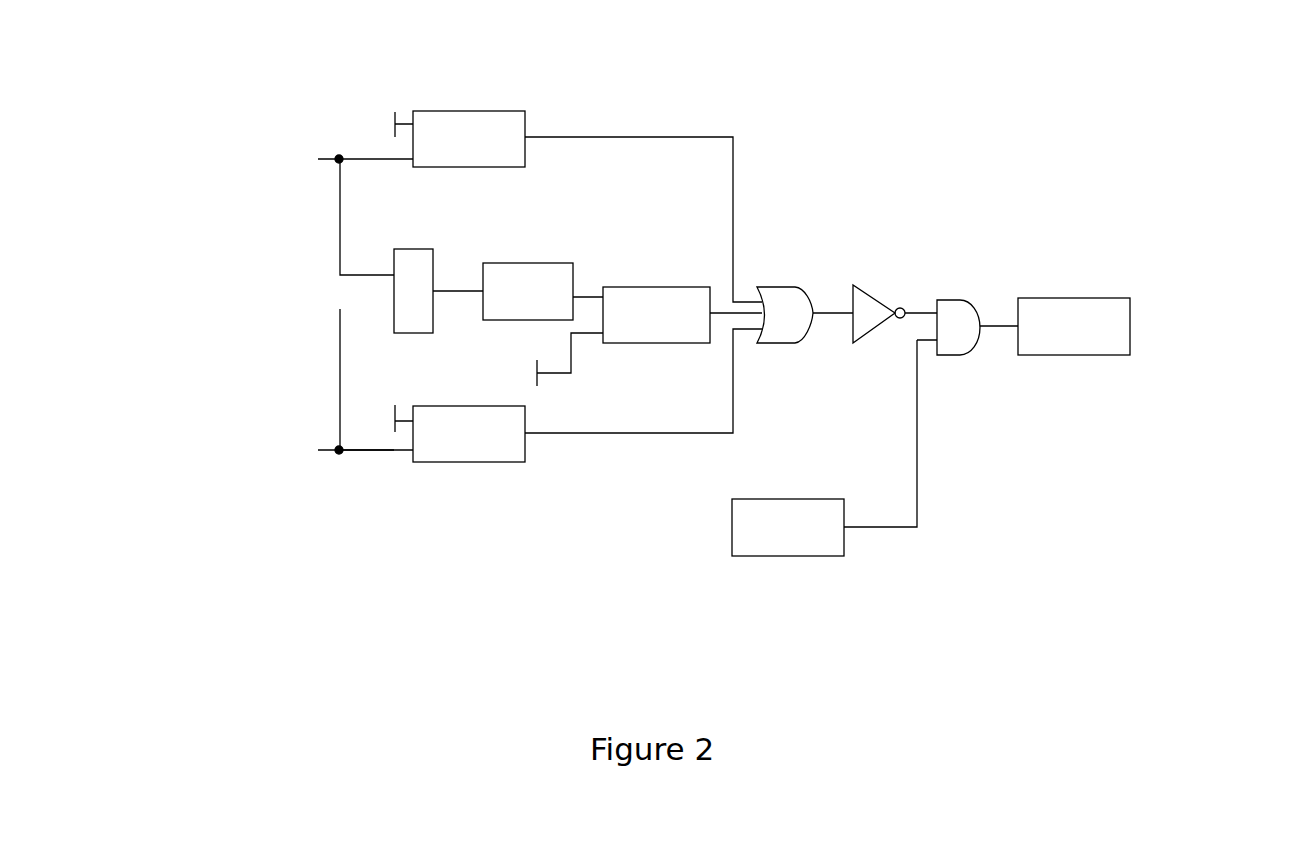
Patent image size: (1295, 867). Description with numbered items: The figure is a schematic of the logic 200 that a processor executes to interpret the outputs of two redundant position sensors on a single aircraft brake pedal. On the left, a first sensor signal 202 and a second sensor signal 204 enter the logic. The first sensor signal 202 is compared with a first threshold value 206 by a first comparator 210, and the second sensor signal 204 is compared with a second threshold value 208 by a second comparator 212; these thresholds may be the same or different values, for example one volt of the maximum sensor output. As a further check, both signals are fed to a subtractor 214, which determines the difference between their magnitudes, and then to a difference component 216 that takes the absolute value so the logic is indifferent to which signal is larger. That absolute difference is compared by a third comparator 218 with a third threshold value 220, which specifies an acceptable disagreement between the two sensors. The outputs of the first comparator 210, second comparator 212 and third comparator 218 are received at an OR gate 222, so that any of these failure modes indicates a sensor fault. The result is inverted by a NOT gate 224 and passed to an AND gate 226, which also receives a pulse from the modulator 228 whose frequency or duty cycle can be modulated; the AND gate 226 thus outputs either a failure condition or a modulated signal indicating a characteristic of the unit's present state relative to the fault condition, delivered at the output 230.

The logic 200 is at (1254, 322).
The first sensor signal S1 202 is at (275, 150).
The second sensor signal S2 204 is at (270, 455).
The threshold value T1 206 is at (345, 112).
The threshold value T2 208 is at (350, 410).
The first comparator 210 is at (475, 111).
The second comparator 212 is at (465, 462).
The subtractor 214 is at (393, 265).
The difference component 216 is at (538, 262).
The third comparator 218 is at (667, 345).
The third threshold value T3 220 is at (528, 388).
The OR gate 222 is at (797, 287).
The NOT gate 224 is at (876, 288).
The AND gate 226 is at (962, 300).
The modulator 228 is at (787, 557).
The output OUT 230 is at (1073, 298).